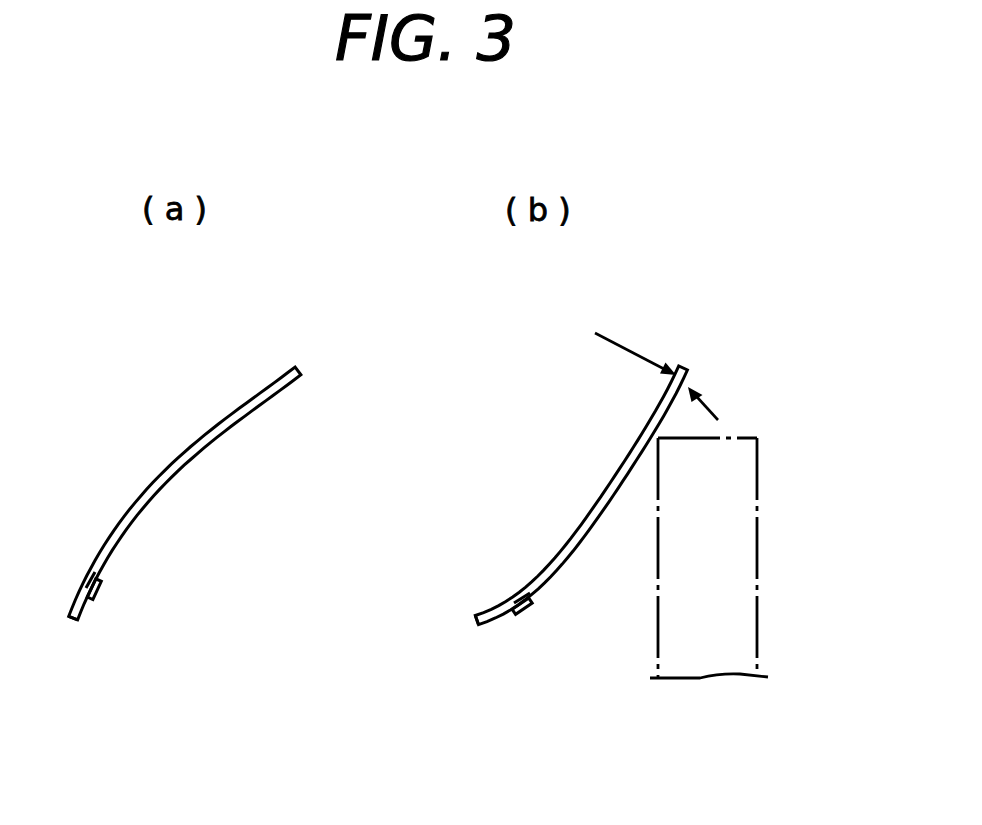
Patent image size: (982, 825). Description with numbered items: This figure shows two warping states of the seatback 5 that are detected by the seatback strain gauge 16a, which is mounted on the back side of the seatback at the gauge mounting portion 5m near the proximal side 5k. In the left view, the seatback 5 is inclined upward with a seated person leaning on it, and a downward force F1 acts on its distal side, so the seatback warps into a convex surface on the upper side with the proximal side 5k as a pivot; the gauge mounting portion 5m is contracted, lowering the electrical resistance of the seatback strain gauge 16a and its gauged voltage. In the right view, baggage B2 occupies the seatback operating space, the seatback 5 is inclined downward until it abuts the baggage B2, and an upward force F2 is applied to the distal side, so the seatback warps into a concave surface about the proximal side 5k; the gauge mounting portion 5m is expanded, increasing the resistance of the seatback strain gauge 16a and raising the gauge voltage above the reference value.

The seatback 5 is at (181, 458).
The gauge mounting portion 5m is at (86, 582).
The proximal side 5k is at (82, 618).
The seatback strain gauge 16a is at (101, 585).
The downward force F1 is at (286, 372).
The upward force F2 is at (295, 381).
The baggage B2 is at (758, 470).